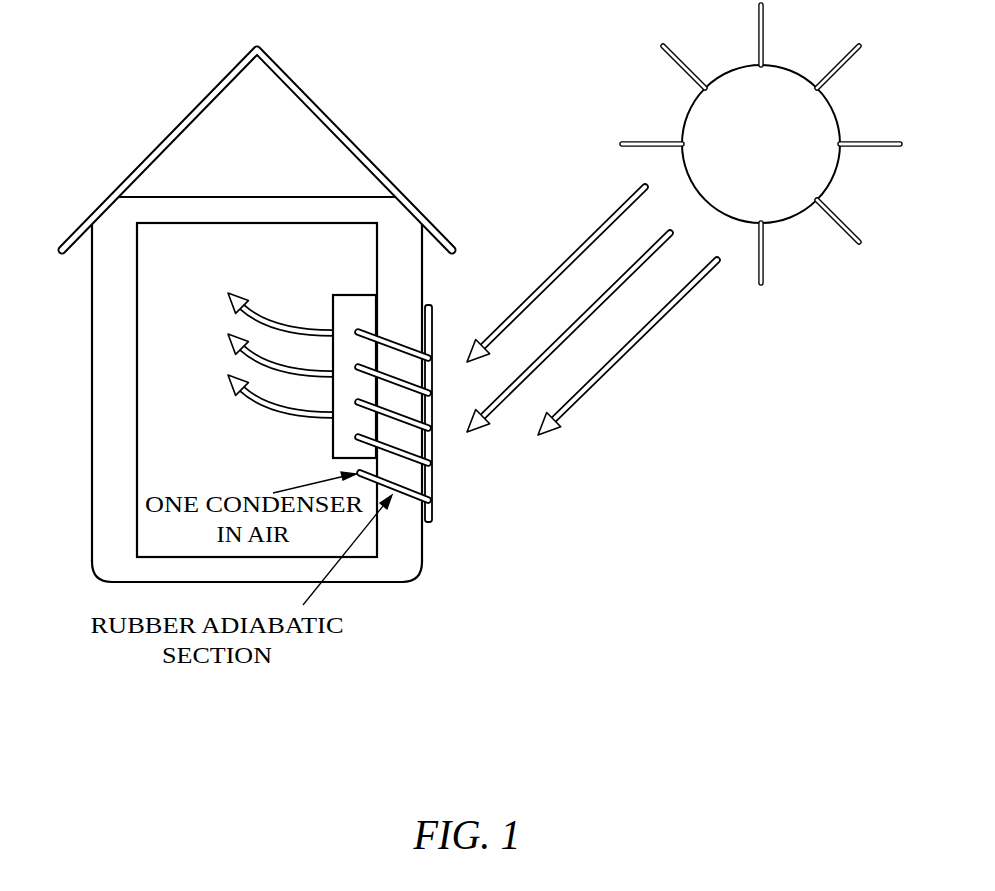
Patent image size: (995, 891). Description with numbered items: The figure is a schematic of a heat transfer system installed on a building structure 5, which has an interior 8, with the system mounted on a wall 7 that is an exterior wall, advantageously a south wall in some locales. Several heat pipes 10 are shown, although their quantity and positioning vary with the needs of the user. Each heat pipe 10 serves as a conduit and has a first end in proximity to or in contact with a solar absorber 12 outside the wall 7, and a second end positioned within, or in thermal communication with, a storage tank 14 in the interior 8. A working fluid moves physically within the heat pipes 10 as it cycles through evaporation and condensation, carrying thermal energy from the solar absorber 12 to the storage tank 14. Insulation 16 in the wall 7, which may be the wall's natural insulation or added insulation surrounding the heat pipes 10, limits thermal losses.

The building structure 5 is at (195, 148).
The wall 7 is at (413, 282).
The interior 8 is at (153, 339).
The heat pipes 10 is at (407, 450).
The solar absorber 12 is at (428, 412).
The storage tank 14 is at (352, 305).
The insulation 16 is at (400, 538).